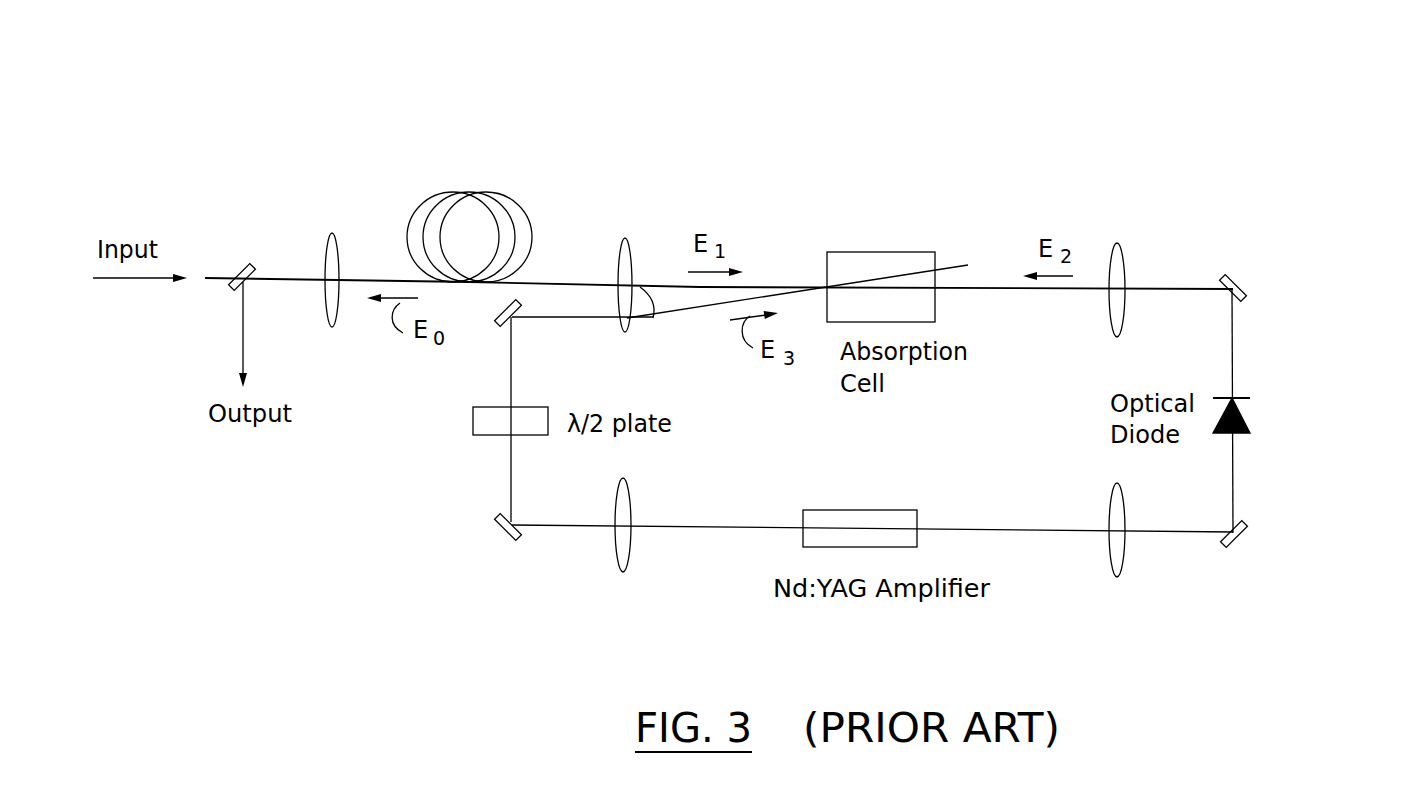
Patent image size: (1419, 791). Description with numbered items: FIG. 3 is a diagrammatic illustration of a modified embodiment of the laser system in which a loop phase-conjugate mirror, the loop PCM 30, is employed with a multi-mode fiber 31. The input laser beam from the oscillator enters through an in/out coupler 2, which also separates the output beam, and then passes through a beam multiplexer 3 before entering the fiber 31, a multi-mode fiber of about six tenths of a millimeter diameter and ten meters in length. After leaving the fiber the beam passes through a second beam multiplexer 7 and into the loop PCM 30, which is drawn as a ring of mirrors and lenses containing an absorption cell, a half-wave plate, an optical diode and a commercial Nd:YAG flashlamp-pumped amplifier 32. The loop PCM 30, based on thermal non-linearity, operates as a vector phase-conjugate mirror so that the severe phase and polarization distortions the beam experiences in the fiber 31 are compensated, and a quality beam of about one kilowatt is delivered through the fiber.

The in/out coupler 2 is at (237, 268).
The beam multiplexer 3 is at (332, 327).
The second beam multiplexer 7 is at (622, 238).
The loop PCM 30 is at (1246, 352).
The multi-mode fiber 31 is at (458, 283).
The Nd:YAG flashlamp-pumped amplifier 32 is at (832, 510).